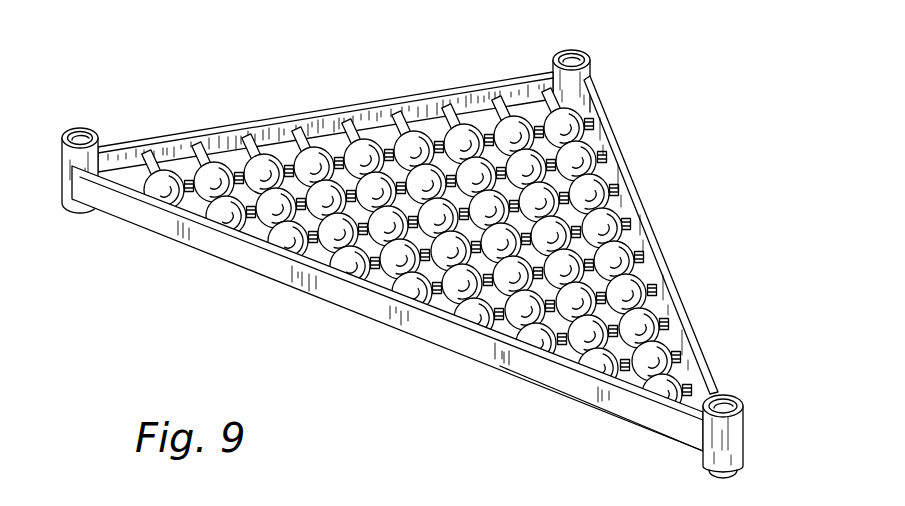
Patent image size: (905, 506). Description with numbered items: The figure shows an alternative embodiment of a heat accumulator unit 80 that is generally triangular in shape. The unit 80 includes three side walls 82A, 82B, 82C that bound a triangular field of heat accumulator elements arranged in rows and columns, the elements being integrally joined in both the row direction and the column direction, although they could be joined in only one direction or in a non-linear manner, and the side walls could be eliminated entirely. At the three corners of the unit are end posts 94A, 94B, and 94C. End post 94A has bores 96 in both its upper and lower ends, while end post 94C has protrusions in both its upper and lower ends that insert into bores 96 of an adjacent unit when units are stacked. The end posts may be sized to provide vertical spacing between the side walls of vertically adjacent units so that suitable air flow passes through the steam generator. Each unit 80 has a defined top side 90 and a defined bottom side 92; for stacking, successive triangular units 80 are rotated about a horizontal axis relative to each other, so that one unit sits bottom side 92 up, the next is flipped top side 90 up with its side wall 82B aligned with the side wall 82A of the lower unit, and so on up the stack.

The heat accumulator unit 80 is at (662, 167).
The side wall 82A is at (686, 299).
The side wall 82B is at (328, 108).
The side wall 82C is at (377, 313).
The top side 90 is at (461, 88).
The bottom side 92 is at (622, 421).
The end post 94A is at (63, 188).
The end post 94B is at (592, 54).
The end post 94C is at (720, 452).
The bore 96 is at (80, 136).